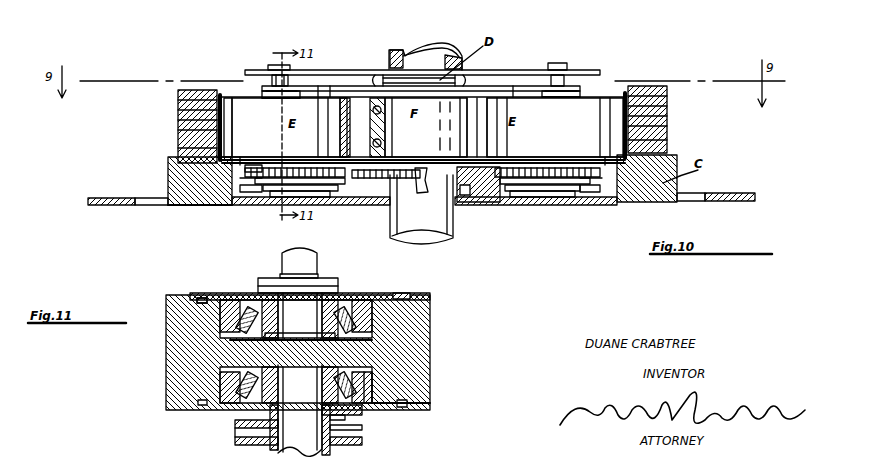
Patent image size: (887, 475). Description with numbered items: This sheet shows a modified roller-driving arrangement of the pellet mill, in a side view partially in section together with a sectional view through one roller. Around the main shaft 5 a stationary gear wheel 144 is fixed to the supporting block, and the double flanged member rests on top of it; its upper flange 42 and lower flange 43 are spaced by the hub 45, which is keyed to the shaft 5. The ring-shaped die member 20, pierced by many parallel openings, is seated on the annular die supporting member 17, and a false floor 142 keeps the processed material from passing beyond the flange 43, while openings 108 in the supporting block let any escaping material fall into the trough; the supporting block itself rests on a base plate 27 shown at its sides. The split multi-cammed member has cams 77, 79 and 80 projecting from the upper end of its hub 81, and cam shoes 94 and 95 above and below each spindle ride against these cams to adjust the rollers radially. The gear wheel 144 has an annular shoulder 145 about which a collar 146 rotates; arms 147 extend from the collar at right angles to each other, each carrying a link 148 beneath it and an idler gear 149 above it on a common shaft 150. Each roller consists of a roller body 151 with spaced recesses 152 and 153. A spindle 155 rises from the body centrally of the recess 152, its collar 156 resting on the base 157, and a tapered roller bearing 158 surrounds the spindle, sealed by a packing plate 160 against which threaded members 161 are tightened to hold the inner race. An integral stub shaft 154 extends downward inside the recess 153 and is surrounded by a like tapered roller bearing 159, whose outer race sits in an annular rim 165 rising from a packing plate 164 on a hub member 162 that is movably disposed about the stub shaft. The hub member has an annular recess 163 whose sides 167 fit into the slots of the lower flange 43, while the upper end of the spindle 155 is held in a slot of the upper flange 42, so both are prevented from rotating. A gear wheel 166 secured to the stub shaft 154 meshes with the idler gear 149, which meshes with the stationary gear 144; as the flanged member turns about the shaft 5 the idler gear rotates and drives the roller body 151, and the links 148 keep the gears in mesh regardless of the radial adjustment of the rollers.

In FIG. 10, the main shaft 5 is at (412, 50).
In FIG. 10, the annular die supporting member 17 is at (168, 178).
In FIG. 10, the ring-shaped die member 20 is at (178, 126).
In FIG. 10, the base plate 27 is at (142, 202).
In FIG. 10, the upper flange 42 is at (315, 70).
In FIG. 10, the lower flange 43 is at (193, 205).
In FIG. 10, the hub 45 is at (447, 67).
In FIG. 10, the cam 77 is at (325, 150).
In FIG. 10, the cam 79 is at (513, 86).
In FIG. 10, the cam 80 is at (353, 86).
In FIG. 10, the hub of multi-cammed member 81 is at (403, 113).
In FIG. 10, the cam shoe 94 is at (263, 97).
In FIG. 10, the cam shoe 95 is at (255, 160).
In FIG. 10, the openings 108 is at (605, 199).
In FIG. 10, the false floor 142 is at (253, 170).
In FIG. 10, the stationary gear wheel 144 is at (470, 172).
In FIG. 10, the annular shoulder 145 is at (467, 203).
In FIG. 10, the collar 146 is at (410, 225).
In FIG. 10, the arms 147 is at (350, 205).
In FIG. 10, the link 148 is at (285, 207).
In FIG. 10, the idler gear 149 is at (315, 207).
In FIG. 10, the shaft 150 is at (327, 205).
In FIG. 10, the roller body 151 is at (243, 107).
In FIG. 11, the roller body 151 is at (173, 353).
In FIG. 11, the recess 152 is at (362, 295).
In FIG. 11, the recess 153 is at (360, 410).
In FIG. 10, the stub shaft 154 is at (267, 207).
In FIG. 11, the stub shaft 154 is at (233, 437).
In FIG. 10, the spindle 155 is at (278, 65).
In FIG. 11, the spindle 155 is at (303, 307).
In FIG. 11, the collar 156 is at (300, 340).
In FIG. 11, the base of recess 157 is at (333, 340).
In FIG. 11, the tapered roller bearing 158 is at (238, 302).
In FIG. 11, the tapered roller bearing 159 is at (373, 378).
In FIG. 11, the packing plate 160 is at (190, 295).
In FIG. 10, the threaded members 161 is at (262, 97).
In FIG. 11, the threaded members 161 is at (265, 278).
In FIG. 10, the hub member 162 is at (275, 160).
In FIG. 11, the hub member 162 is at (237, 422).
In FIG. 11, the annular recess 163 is at (360, 433).
In FIG. 11, the packing plate 164 is at (407, 407).
In FIG. 11, the annular rim 165 is at (375, 387).
In FIG. 10, the gear wheel 166 is at (265, 178).
In FIG. 11, the sides of annular recess 167 is at (345, 408).